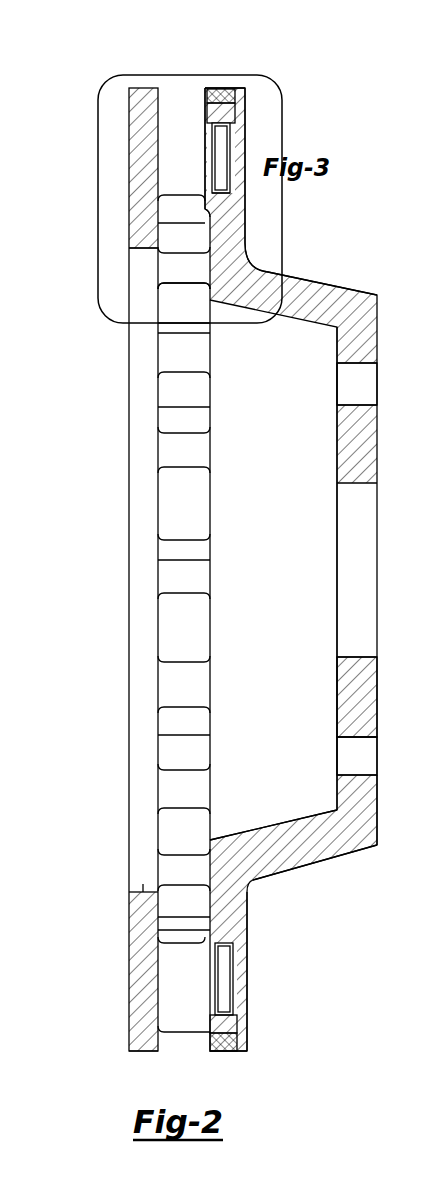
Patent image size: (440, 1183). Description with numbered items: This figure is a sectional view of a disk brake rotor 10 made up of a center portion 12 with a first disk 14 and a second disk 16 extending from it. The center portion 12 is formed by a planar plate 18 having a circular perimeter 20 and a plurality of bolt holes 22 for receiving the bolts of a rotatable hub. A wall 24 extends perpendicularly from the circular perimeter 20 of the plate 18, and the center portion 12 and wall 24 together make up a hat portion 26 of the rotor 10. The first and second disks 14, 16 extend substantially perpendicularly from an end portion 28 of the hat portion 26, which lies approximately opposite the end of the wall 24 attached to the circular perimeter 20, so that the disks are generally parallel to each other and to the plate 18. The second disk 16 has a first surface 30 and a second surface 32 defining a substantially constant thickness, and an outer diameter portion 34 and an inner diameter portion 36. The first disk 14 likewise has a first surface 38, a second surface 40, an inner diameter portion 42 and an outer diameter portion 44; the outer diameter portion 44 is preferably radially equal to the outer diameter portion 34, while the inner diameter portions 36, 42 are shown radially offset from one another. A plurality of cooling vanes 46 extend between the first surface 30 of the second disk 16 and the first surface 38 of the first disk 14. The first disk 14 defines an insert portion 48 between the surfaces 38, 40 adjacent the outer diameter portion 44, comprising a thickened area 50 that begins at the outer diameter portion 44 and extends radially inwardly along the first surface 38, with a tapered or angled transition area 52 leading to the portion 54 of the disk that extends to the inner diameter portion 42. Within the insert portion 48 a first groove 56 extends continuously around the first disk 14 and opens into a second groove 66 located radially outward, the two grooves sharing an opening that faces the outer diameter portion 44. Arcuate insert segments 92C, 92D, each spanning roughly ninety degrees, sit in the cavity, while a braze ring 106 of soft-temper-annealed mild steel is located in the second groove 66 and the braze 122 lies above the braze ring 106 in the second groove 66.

In FIG. 2, the disk brake rotor 10 is at (89, 497).
In FIG. 2, the center portion 12 is at (321, 497).
In FIG. 3, the first disk 14 is at (237, 235).
In FIG. 2, the second disk 16 is at (140, 259).
In FIG. 3, the second disk 16 is at (140, 259).
In FIG. 2, the planar plate 18 is at (379, 318).
In FIG. 2, the circular perimeter 20 is at (384, 813).
In FIG. 2, the bolt holes 22 is at (366, 398).
In FIG. 2, the wall 24 is at (277, 835).
In FIG. 2, the hat portion 26 is at (321, 706).
In FIG. 2, the end portion 28 is at (247, 823).
In FIG. 2, the first surface 30 is at (161, 1032).
In FIG. 2, the second surface 32 is at (129, 1008).
In FIG. 2, the outer diameter portion 34 is at (136, 1063).
In FIG. 2, the inner diameter portion 36 is at (143, 891).
In FIG. 2, the first surface 38 is at (210, 1017).
In FIG. 2, the second surface 40 is at (247, 977).
In FIG. 2, the inner diameter portion 42 is at (232, 862).
In FIG. 2, the outer diameter portion 44 is at (227, 1063).
In FIG. 2, the cooling vanes 46 is at (163, 863).
In FIG. 3, the insert portion 48 is at (255, 134).
In FIG. 3, the thickened area 50 is at (203, 140).
In FIG. 3, the transition area 52 is at (208, 213).
In FIG. 3, the portion 54 is at (208, 267).
In FIG. 3, the first groove 56 is at (240, 207).
In FIG. 3, the second groove 66 is at (236, 112).
In FIG. 2, the insert segment 92C is at (227, 995).
In FIG. 3, the insert segment 92D is at (222, 155).
In FIG. 3, the braze ring 106 is at (207, 108).
In FIG. 3, the braze 122 is at (216, 89).